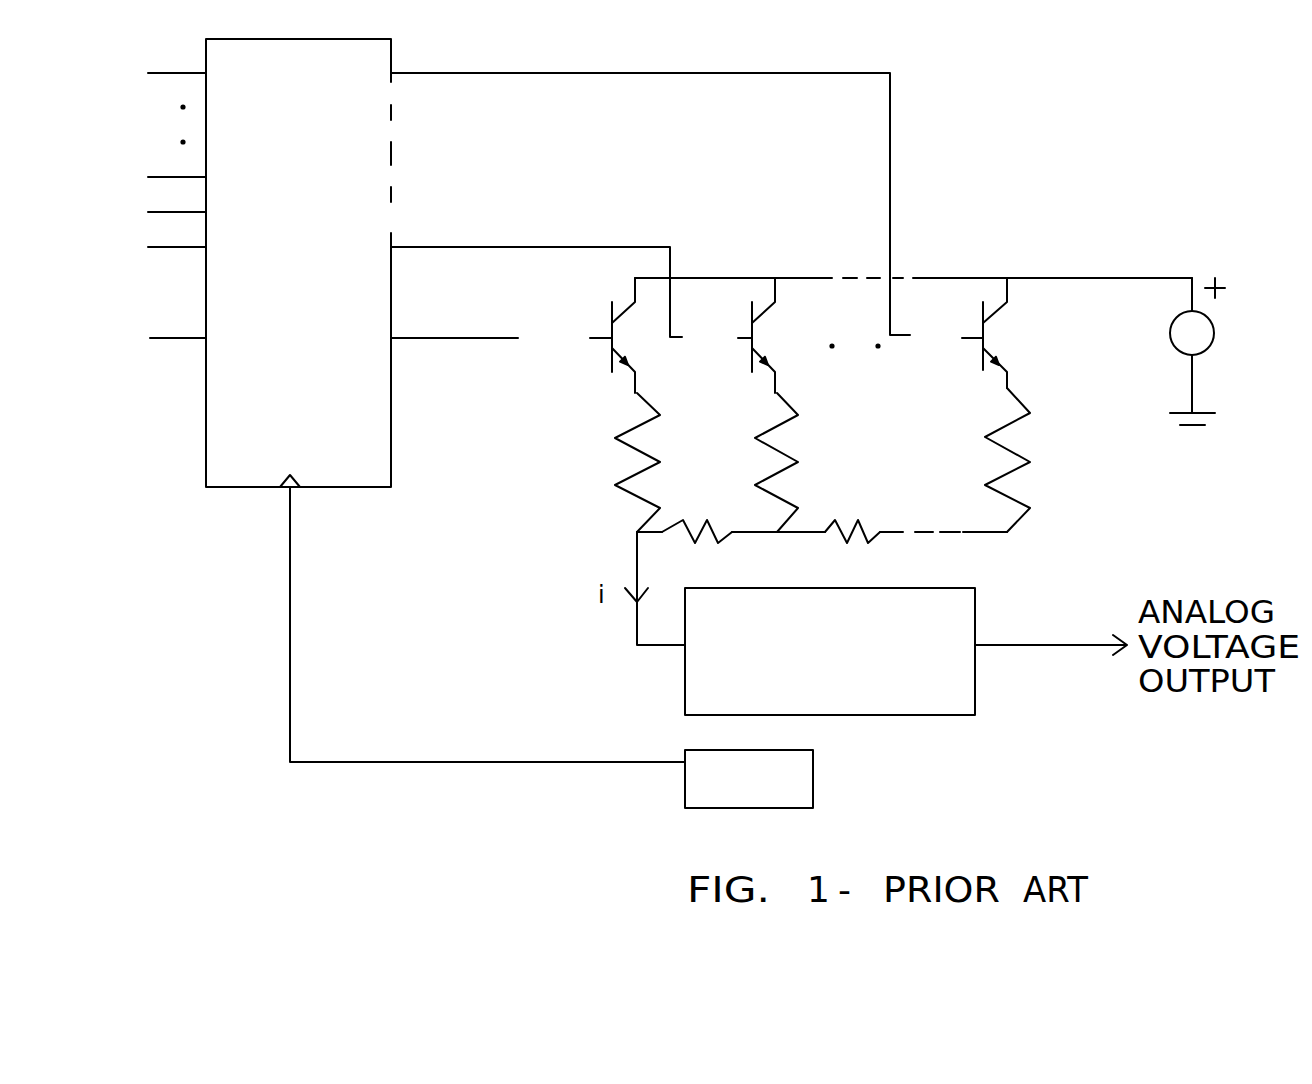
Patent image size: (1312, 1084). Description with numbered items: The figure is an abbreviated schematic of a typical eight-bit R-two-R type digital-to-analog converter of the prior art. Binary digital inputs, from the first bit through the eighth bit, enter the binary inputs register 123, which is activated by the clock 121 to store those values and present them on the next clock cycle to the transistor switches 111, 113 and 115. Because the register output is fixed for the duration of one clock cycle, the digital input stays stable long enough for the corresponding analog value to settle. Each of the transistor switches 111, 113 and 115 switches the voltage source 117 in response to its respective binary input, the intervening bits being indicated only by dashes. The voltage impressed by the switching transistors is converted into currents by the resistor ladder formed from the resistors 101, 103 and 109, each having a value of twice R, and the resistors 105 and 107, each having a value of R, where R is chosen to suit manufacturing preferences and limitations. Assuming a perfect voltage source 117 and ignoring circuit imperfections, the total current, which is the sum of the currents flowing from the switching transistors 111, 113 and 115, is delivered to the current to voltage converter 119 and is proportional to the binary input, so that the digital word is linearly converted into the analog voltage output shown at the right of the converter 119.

The resistor 101 is at (600, 462).
The resistor 103 is at (753, 452).
The resistor 105 is at (715, 500).
The resistor 107 is at (845, 517).
The resistor 109 is at (975, 460).
The transistor switch 111 is at (586, 328).
The transistor switch 113 is at (766, 335).
The transistor switch 115 is at (997, 333).
The voltage source 117 is at (1229, 351).
The current to voltage converter 119 is at (867, 644).
The clock 121 is at (551, 652).
The binary inputs register 123 is at (347, 500).